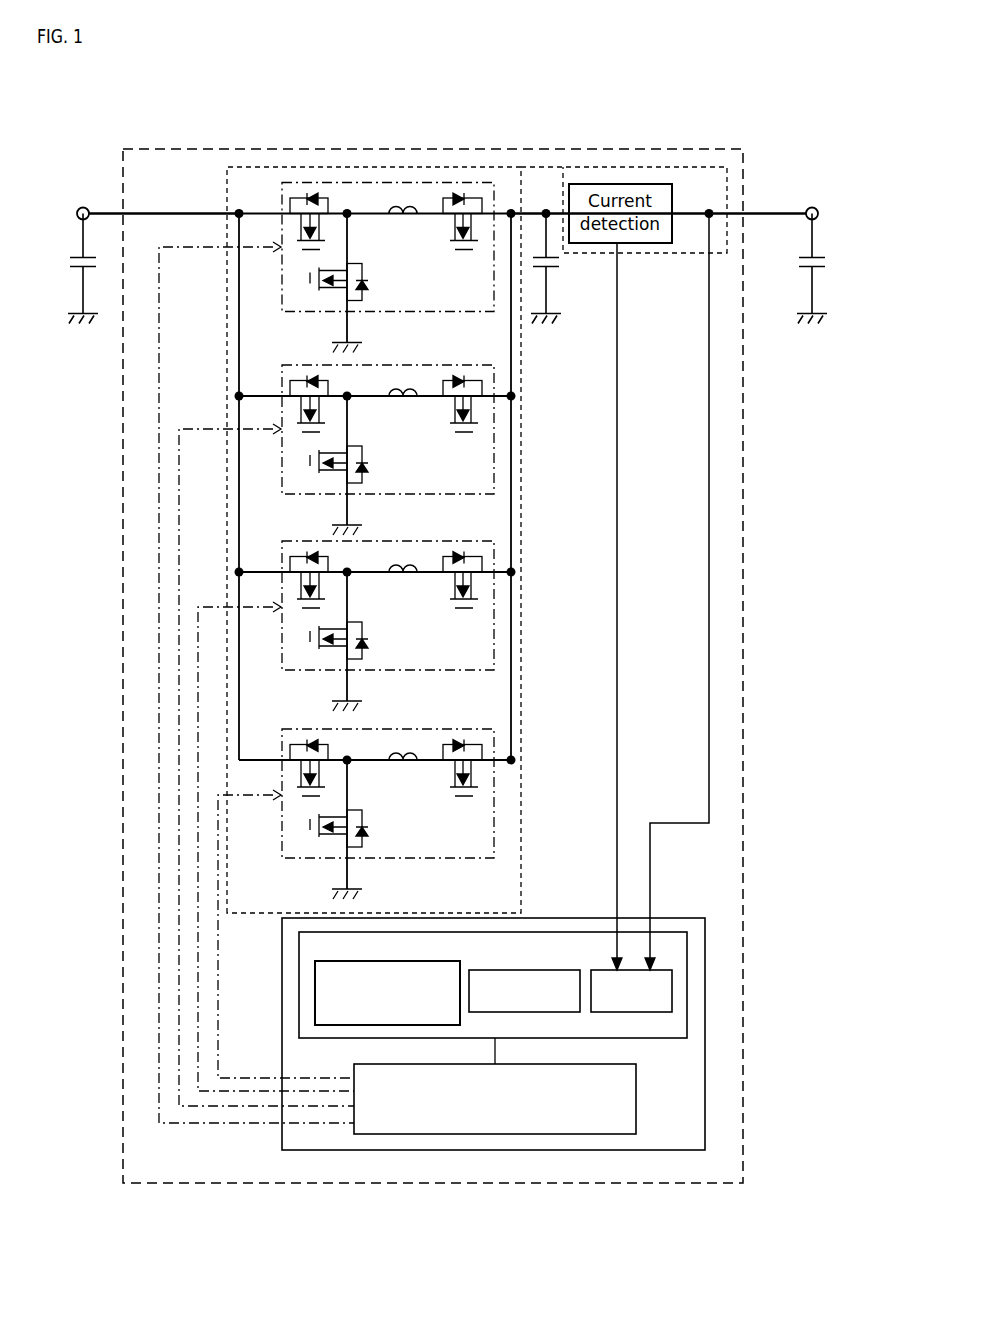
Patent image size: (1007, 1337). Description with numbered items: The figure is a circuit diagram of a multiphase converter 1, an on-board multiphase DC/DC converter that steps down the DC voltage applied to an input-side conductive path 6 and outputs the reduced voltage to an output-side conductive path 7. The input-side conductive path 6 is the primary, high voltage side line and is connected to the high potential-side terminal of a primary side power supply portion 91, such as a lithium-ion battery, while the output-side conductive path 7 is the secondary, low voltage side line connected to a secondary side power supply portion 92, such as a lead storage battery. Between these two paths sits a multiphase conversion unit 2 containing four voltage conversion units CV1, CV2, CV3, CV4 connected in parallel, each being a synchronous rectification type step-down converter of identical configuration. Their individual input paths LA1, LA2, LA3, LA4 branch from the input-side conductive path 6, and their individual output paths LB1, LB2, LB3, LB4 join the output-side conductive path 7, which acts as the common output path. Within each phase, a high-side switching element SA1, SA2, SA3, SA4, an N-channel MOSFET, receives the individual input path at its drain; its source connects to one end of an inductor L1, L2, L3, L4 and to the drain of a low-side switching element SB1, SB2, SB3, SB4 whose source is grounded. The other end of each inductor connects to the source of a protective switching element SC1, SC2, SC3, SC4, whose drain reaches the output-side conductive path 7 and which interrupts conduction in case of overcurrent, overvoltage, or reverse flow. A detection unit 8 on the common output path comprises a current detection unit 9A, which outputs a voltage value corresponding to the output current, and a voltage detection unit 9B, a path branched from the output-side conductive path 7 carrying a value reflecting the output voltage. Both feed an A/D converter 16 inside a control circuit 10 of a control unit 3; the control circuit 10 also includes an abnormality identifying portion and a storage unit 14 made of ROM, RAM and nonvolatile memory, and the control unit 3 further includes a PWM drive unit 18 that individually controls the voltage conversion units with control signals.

The multiphase converter 1 is at (707, 149).
The multiphase conversion unit 2 is at (235, 167).
The control unit 3 is at (567, 918).
The input-side conductive path 6 is at (167, 213).
The output-side conductive path 7 is at (556, 213).
The detection unit 8 is at (718, 167).
The current detection unit 9A is at (650, 243).
The voltage detection unit 9B is at (708, 232).
The control circuit 10 is at (687, 977).
The storage unit 14 is at (493, 970).
The A/D converter 16 is at (673, 1002).
The PWM drive unit 18 is at (636, 1097).
The primary side power supply portion 91 is at (73, 257).
The secondary side power supply portion 92 is at (820, 257).
The individual input path LA1 is at (257, 213).
The individual input path LA2 is at (262, 400).
The individual input path LA3 is at (262, 576).
The individual input path LA4 is at (257, 761).
The individual output path LB1 is at (500, 213).
The individual output path LB2 is at (502, 394).
The individual output path LB3 is at (502, 570).
The individual output path LB4 is at (502, 758).
The first phase voltage conversion unit CV1 is at (281, 190).
The second phase voltage conversion unit CV2 is at (494, 424).
The third phase voltage conversion unit CV3 is at (494, 600).
The fourth phase voltage conversion unit CV4 is at (494, 788).
The high-side switching element SA1 is at (297, 198).
The high-side switching element SA2 is at (306, 381).
The high-side switching element SA3 is at (306, 557).
The high-side switching element SA4 is at (306, 745).
The low-side switching element SB1 is at (355, 263).
The low-side switching element SB2 is at (355, 446).
The low-side switching element SB3 is at (355, 622).
The low-side switching element SB4 is at (355, 810).
The protective switching element SC1 is at (473, 197).
The protective switching element SC2 is at (450, 381).
The protective switching element SC3 is at (450, 557).
The protective switching element SC4 is at (450, 745).
The inductor L1 is at (403, 207).
The inductor L2 is at (393, 391).
The inductor L3 is at (393, 567).
The inductor L4 is at (393, 755).